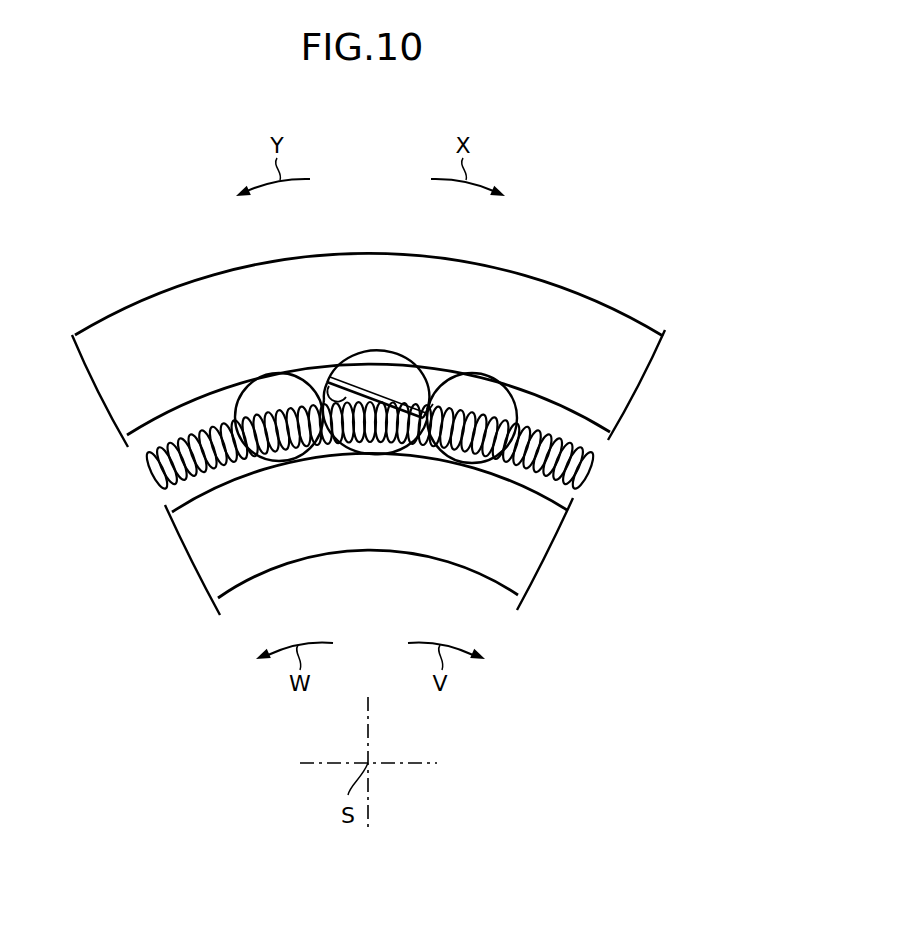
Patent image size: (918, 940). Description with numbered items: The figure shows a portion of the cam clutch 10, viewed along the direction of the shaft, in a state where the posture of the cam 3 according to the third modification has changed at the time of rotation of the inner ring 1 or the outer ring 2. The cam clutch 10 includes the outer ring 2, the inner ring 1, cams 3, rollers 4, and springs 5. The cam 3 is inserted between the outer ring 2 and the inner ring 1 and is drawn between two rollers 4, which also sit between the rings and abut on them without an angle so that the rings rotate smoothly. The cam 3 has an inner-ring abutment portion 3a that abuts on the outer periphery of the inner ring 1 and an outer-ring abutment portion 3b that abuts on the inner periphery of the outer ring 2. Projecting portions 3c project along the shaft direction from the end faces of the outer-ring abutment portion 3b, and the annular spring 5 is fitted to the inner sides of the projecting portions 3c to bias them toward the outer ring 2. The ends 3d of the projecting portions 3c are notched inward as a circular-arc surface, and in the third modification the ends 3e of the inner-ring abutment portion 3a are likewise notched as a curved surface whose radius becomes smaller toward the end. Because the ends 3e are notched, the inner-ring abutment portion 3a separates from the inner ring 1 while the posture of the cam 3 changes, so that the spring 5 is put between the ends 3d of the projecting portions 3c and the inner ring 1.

The inner ring 1 is at (410, 545).
The outer ring 2 is at (562, 298).
The cam 3 is at (414, 377).
The inner-ring abutment portion 3a is at (362, 438).
The outer-ring abutment portion 3b is at (375, 377).
The projecting portion 3c is at (323, 400).
The end (first notched portion) 3d is at (445, 400).
The end (second notched portion) 3e is at (390, 438).
The roller 4 is at (273, 388).
The spring 5 is at (158, 474).
The cam clutch 10 is at (590, 190).